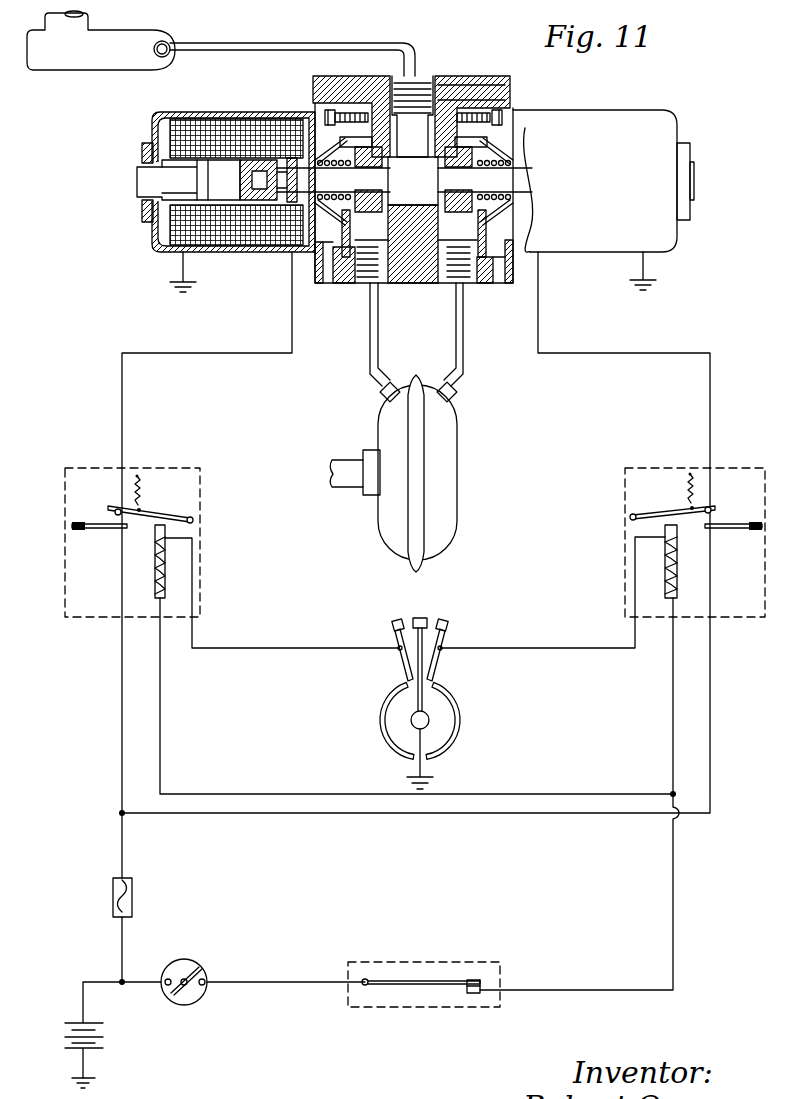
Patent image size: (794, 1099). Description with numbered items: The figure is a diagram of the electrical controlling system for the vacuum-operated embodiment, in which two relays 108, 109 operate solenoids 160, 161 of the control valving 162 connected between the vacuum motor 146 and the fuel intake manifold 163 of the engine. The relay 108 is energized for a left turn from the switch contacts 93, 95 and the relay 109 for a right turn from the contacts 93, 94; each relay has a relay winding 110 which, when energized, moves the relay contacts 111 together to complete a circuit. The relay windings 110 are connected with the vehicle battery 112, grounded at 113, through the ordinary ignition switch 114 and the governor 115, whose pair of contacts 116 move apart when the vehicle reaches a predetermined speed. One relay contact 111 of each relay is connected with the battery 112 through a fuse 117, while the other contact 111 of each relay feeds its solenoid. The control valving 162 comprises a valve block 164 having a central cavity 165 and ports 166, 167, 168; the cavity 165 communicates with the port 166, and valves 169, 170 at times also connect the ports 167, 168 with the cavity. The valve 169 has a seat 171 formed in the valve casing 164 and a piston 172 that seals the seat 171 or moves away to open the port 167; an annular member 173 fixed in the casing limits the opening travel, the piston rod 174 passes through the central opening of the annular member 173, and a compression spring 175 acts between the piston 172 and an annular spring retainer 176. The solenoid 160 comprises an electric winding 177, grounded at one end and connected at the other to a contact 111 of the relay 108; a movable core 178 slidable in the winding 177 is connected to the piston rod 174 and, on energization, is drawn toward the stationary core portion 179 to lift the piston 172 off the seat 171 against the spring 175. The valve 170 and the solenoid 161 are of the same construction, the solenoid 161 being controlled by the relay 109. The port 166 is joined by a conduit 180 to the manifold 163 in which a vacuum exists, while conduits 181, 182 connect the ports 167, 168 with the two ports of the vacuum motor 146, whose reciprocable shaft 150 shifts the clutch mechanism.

The fuel intake manifold 163 is at (158, 33).
The conduit 180 is at (294, 43).
The solenoid 160 is at (148, 123).
The electric winding 177 is at (247, 244).
The stationary core portion 179 is at (140, 158).
The core 178 is at (230, 164).
The piston rod 174 is at (276, 169).
The control valving 162 is at (455, 73).
The valve block 164 is at (497, 92).
The port 166 is at (427, 77).
The valve 169 is at (373, 139).
The central cavity 165 is at (424, 184).
The seat 171 is at (413, 234).
The annular member 173 is at (341, 105).
The piston 172 is at (343, 106).
The annular spring retainer 176 is at (316, 111).
The valve 170 is at (488, 142).
The compression spring 175 is at (337, 201).
The port 167 is at (366, 274).
The port 168 is at (467, 276).
The solenoid 161 is at (621, 105).
The conduit 181 is at (369, 351).
The conduit 182 is at (464, 351).
The vacuum motor 146 is at (462, 438).
The reciprocable shaft 150 is at (342, 460).
The relay 108 is at (100, 622).
The relay 109 is at (732, 622).
The relay contacts 111 is at (108, 517).
The relay winding 110 is at (150, 574).
The switch contact 93 is at (422, 617).
The switch contact 95 is at (398, 619).
The switch contact 94 is at (447, 622).
The fuse 117 is at (132, 892).
The ignition switch 114 is at (207, 970).
The vehicle battery 112 is at (105, 1043).
The ground 113 is at (96, 1088).
The governor 115 is at (503, 972).
The contacts 116 is at (473, 995).